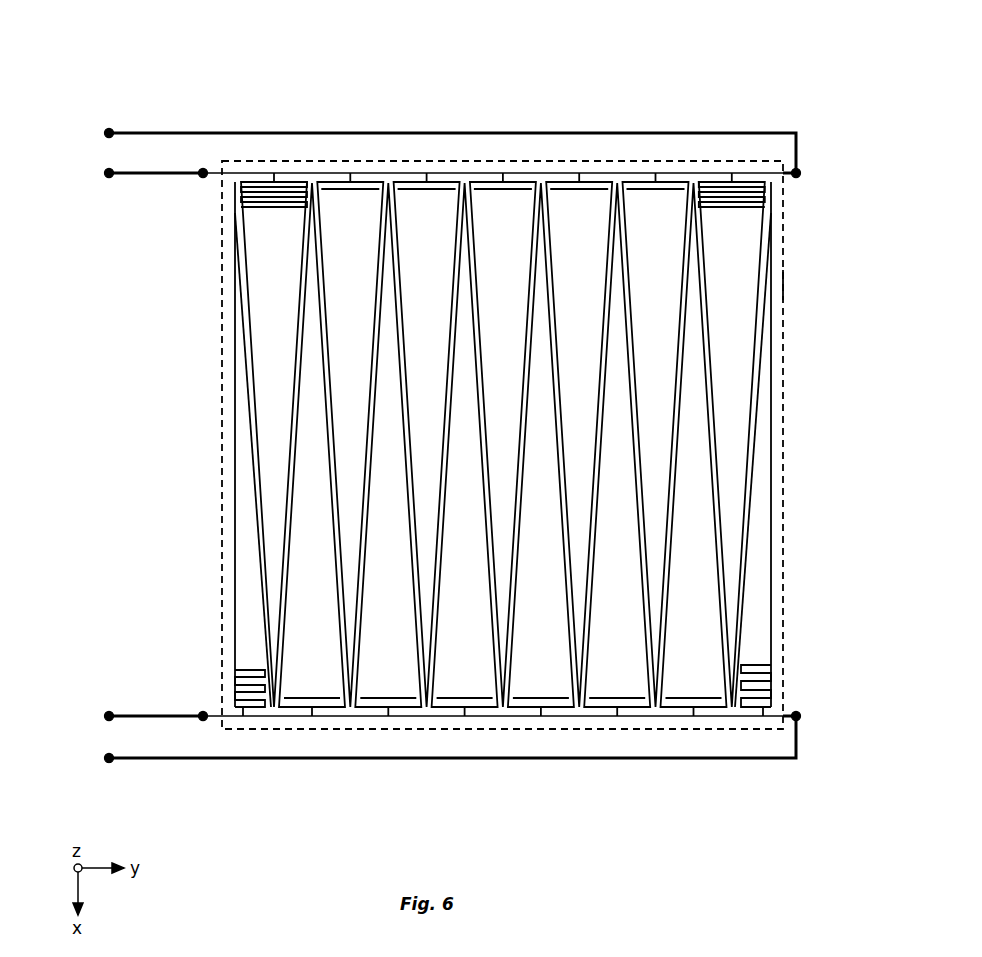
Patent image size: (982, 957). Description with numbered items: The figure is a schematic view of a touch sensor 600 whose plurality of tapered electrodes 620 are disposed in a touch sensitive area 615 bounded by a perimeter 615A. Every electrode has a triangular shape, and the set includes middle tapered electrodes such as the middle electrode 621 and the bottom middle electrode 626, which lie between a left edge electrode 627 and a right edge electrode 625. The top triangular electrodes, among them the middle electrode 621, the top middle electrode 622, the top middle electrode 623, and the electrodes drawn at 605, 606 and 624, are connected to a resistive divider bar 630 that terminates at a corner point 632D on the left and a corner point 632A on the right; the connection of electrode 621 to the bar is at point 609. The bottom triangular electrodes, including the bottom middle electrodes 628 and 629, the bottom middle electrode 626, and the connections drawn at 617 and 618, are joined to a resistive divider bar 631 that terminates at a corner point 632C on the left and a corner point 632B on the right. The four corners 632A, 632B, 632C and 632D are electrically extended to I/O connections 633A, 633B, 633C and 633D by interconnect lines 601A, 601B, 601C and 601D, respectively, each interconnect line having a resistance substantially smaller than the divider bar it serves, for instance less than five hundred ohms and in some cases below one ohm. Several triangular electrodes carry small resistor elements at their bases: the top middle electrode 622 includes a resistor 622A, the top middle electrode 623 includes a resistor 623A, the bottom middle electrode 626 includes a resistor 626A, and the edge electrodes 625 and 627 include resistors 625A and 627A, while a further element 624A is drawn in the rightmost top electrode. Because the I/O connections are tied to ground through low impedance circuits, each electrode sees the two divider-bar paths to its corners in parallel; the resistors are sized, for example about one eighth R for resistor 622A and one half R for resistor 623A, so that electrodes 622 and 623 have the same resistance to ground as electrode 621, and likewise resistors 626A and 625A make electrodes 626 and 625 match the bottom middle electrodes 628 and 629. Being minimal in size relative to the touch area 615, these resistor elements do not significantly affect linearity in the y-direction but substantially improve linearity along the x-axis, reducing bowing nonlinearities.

The touch sensor 600 is at (230, 46).
The interconnect line 601A is at (181, 133).
The interconnect line 601B is at (766, 759).
The interconnect line 601C is at (140, 717).
The interconnect line 601D is at (138, 174).
The first tapered electrode finger 605 is at (274, 182).
The second tapered electrode finger 606 is at (351, 182).
The point 609 is at (503, 182).
The touch sensitive area 615 is at (781, 243).
The perimeter 615A is at (784, 286).
The electrode connection stub 617 is at (468, 705).
The electrode connection stub 618 is at (545, 705).
The tapered electrodes 620 is at (418, 196).
The middle electrode 621 is at (521, 187).
The top middle electrode 622 is at (563, 197).
The resistor 622A is at (595, 185).
The top middle electrode 623 is at (637, 203).
The resistor 623A is at (667, 183).
The right tapered electrode finger 624 is at (740, 390).
The serpentine connection of finger 624 624A is at (763, 192).
The edge electrode 625 is at (763, 512).
The resistor 625A is at (767, 673).
The bottom middle electrode 626 is at (700, 578).
The resistor 626A is at (710, 707).
The edge electrode 627 is at (245, 510).
The resistor 627A is at (236, 682).
The bottom middle electrode 628 is at (475, 700).
The bottom middle electrode 629 is at (552, 700).
The resistive divider bar 630 is at (748, 178).
The resistive divider bar 631 is at (277, 717).
The corner point 632A is at (800, 173).
The corner point 632B is at (800, 717).
The corner point 632C is at (200, 716).
The corner point 632D is at (203, 175).
The I/O connection 633A is at (105, 133).
The I/O connection 633B is at (105, 759).
The I/O connection 633C is at (105, 716).
The I/O connection 633D is at (105, 173).